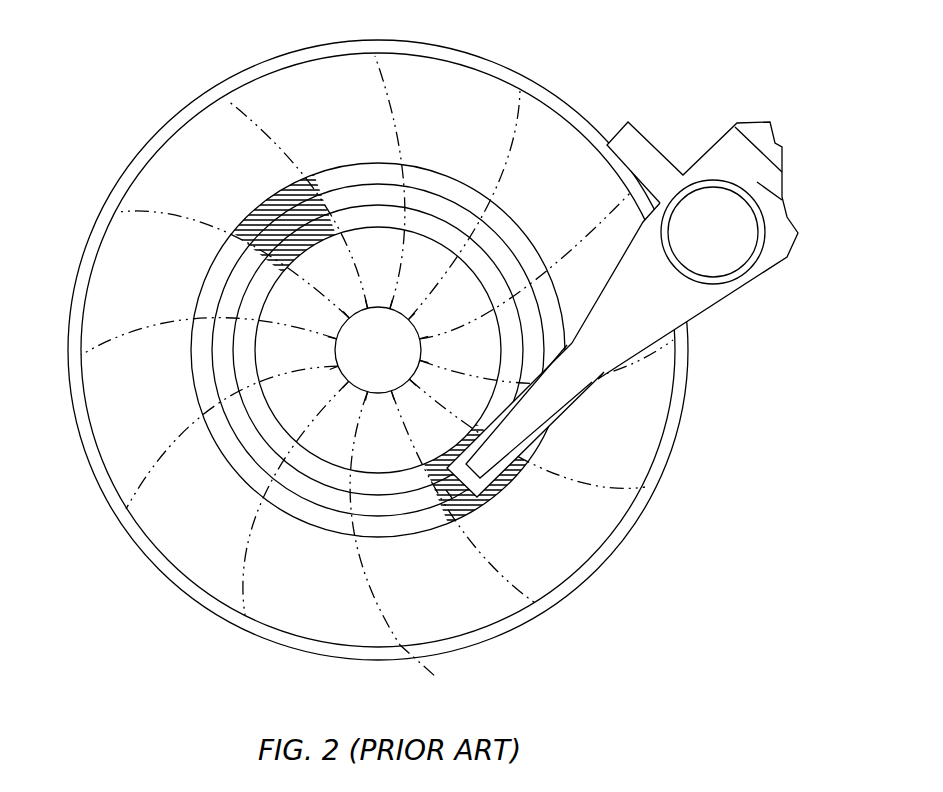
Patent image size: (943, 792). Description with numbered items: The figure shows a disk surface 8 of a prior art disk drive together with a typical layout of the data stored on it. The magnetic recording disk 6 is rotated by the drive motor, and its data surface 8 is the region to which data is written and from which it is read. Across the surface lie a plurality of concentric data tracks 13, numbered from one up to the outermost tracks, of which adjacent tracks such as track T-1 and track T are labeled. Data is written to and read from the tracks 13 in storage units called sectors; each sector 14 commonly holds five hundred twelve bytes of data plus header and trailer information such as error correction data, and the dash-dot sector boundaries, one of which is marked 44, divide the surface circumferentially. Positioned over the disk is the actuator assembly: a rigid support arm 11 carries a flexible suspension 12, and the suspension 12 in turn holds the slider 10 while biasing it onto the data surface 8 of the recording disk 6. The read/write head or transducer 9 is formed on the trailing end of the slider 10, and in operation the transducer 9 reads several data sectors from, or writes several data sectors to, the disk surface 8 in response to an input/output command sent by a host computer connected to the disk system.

The magnetic recording disk 6 is at (138, 550).
The data surface 8 is at (278, 605).
The read/write head 9 is at (446, 490).
The slider 10 is at (492, 488).
The rigid support arm 11 is at (597, 300).
The flexible suspension 12 is at (530, 418).
The concentric data tracks 13 is at (233, 455).
The sector 14 is at (287, 223).
The servo sector 44 is at (411, 546).
The track T is at (227, 382).
The track T-1 is at (203, 357).